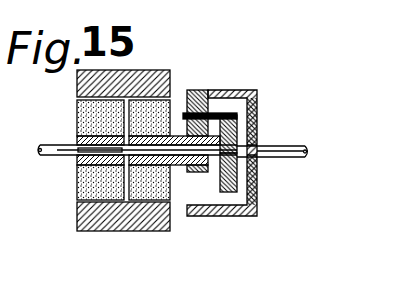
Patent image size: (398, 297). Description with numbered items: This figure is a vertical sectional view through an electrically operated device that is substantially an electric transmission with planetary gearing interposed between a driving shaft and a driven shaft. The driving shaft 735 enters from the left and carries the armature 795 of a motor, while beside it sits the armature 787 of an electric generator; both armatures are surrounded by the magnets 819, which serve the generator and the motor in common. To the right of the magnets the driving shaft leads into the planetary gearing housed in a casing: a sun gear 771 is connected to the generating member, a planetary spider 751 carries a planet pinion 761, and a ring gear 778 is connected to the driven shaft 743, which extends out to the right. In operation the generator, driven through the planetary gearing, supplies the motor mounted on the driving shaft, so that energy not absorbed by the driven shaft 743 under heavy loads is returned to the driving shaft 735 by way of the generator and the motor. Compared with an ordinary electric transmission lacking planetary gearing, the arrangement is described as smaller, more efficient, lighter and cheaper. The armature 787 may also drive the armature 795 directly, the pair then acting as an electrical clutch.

The driving shaft 735 is at (60, 143).
The magnets 819 is at (143, 85).
The motor armature 795 is at (100, 150).
The generator armature 787 is at (174, 150).
The ring gear 778 is at (196, 100).
The planet pinion 761 is at (222, 93).
The sun gear 771 is at (237, 132).
The planetary spider 751 is at (237, 183).
The driven shaft 743 is at (310, 152).